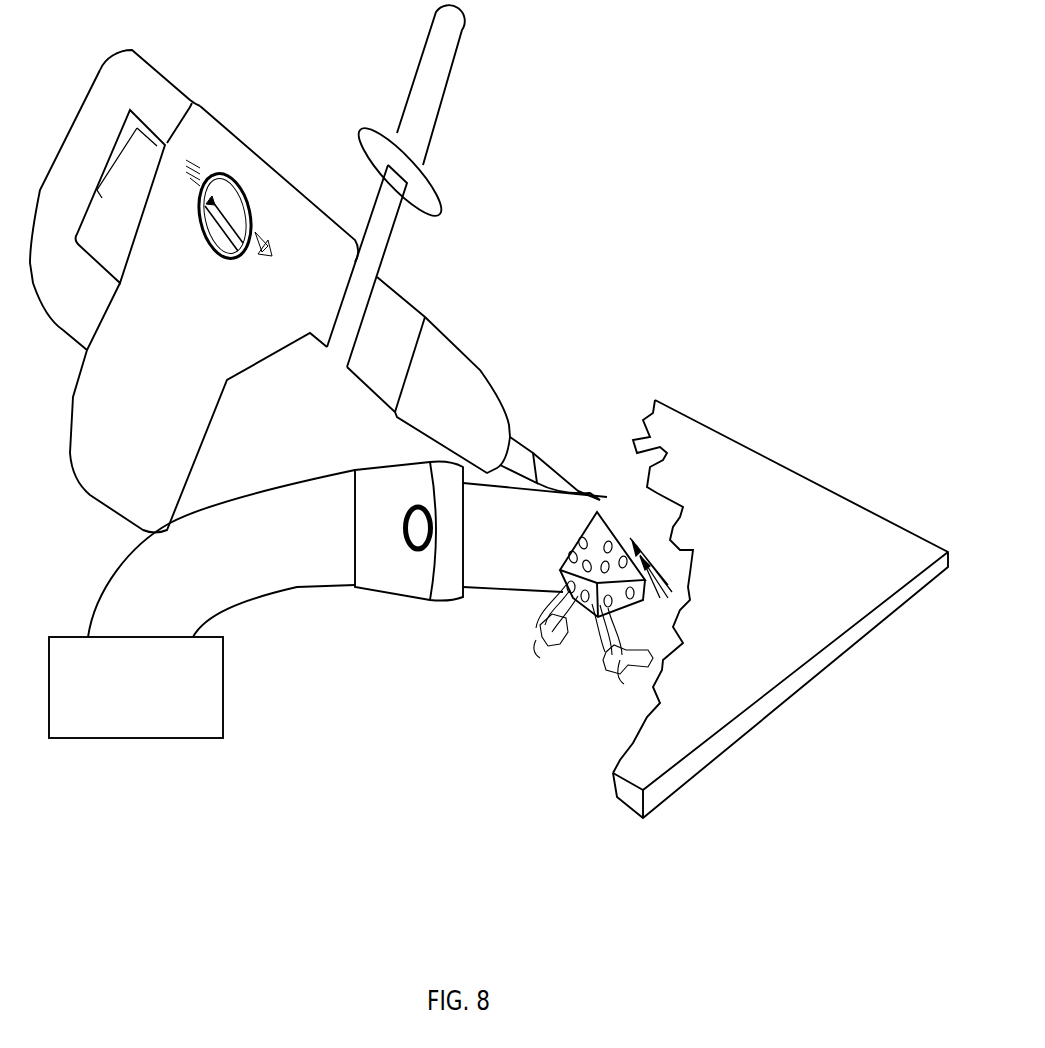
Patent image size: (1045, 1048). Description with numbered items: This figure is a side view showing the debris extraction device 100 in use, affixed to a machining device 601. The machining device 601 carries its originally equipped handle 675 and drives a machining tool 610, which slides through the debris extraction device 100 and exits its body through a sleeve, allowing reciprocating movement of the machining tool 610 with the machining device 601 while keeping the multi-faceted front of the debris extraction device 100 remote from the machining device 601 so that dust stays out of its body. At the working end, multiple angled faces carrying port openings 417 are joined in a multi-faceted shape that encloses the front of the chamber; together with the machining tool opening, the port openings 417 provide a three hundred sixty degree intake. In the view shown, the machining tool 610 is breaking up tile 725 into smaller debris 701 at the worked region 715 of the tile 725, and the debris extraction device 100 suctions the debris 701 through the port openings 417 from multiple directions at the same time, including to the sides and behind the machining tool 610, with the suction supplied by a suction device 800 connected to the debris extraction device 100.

The debris extraction device 100 is at (526, 392).
The port openings 417 is at (583, 542).
The machining device 601 is at (270, 187).
The machining tool 610 is at (657, 582).
The handle 675 is at (428, 93).
The debris 701 is at (583, 655).
The treated region 715 is at (653, 535).
The tile 725 is at (800, 547).
The suction device 800 is at (190, 728).